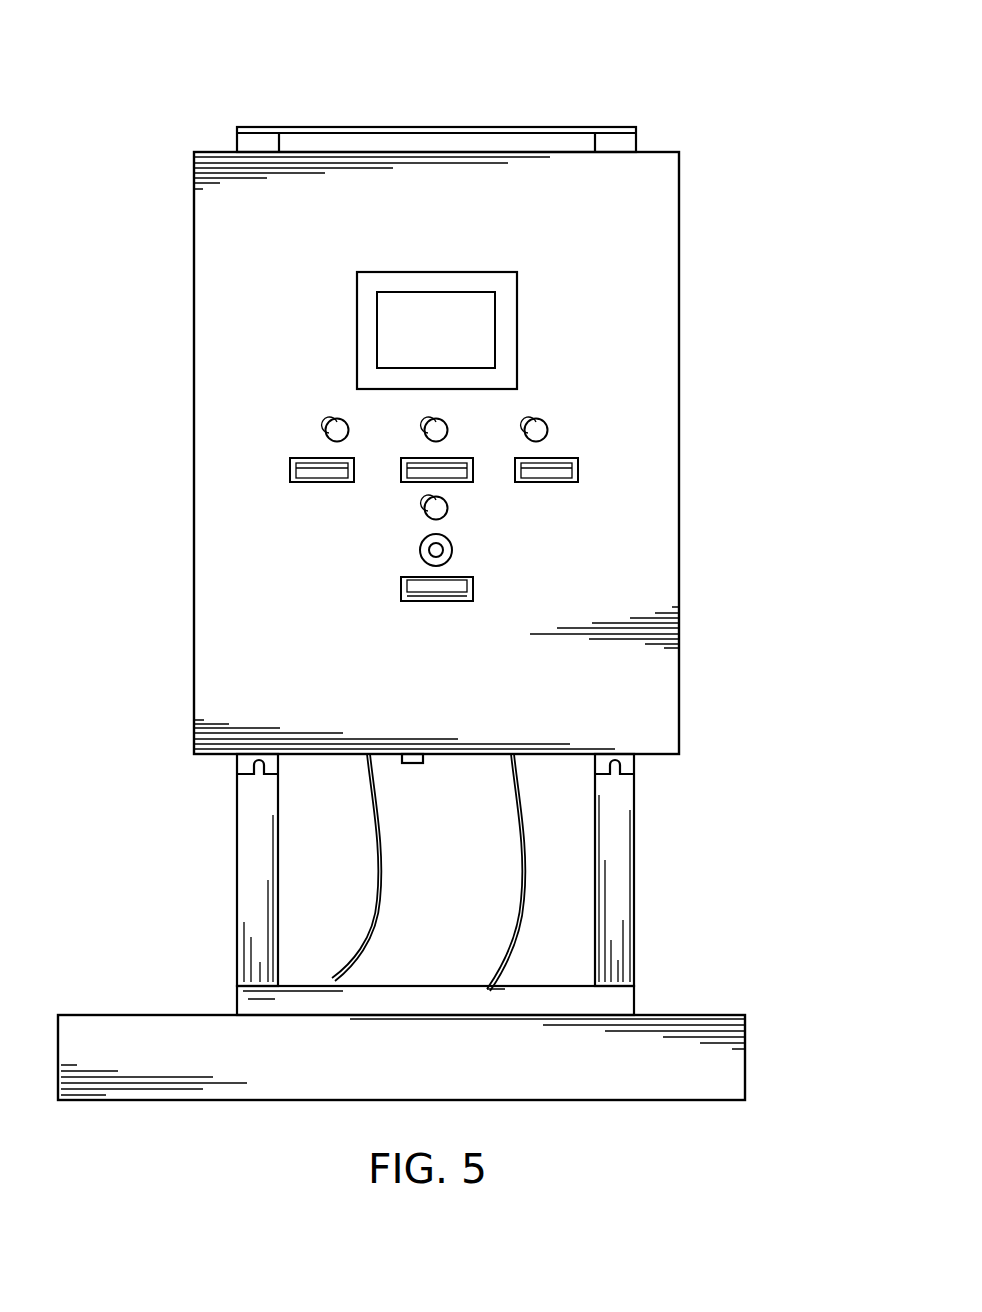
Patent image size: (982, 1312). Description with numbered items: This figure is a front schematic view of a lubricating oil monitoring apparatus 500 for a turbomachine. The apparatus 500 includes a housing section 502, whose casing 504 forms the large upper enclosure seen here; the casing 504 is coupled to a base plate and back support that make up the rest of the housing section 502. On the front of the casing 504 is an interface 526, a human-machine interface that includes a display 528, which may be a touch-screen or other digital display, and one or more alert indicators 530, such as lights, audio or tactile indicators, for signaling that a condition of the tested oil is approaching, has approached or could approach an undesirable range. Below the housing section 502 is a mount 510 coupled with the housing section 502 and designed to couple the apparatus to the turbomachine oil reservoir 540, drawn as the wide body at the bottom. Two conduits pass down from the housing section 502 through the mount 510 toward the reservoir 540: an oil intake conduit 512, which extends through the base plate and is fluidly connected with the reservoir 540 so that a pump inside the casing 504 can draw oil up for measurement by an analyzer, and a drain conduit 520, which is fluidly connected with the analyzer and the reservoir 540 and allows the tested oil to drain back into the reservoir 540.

The lubricating oil monitoring apparatus 500 is at (113, 94).
The housing section 502 is at (710, 312).
The casing 504 is at (497, 229).
The mount 510 is at (717, 935).
The oil intake conduit 512 is at (357, 878).
The drain conduit 520 is at (492, 872).
The interface 526 is at (321, 290).
The display 528 is at (540, 326).
The alert indicator 530 is at (359, 530).
The turbomachine oil reservoir 540 is at (458, 1069).